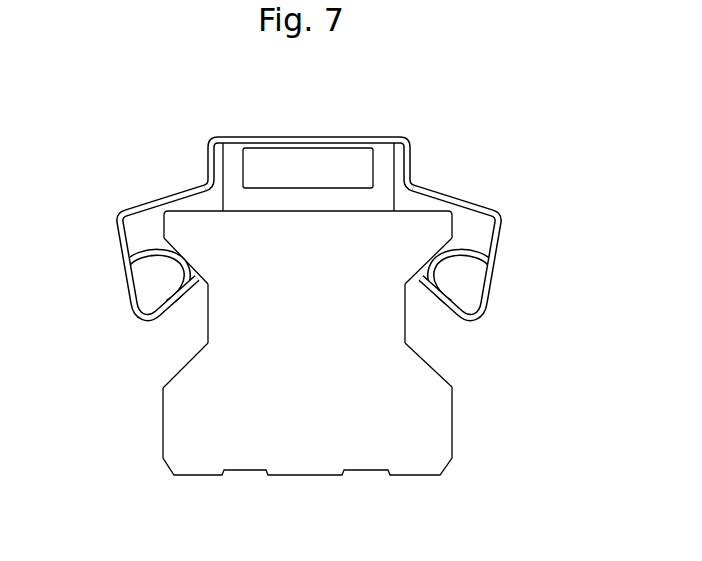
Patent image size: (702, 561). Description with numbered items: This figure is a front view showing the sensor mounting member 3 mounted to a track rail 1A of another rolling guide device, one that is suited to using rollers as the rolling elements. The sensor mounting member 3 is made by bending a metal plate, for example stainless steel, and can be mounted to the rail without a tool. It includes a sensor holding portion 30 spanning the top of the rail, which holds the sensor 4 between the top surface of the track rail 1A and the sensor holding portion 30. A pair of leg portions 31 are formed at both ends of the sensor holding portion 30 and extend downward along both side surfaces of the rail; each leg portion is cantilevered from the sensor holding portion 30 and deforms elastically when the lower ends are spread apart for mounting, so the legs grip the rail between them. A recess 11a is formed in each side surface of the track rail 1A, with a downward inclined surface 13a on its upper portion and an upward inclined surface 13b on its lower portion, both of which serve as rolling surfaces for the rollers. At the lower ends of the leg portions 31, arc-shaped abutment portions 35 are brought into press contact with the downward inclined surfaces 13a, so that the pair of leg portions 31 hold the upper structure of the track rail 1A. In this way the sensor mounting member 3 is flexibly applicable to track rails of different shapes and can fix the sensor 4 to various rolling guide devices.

The track rail 1A is at (456, 428).
The sensor mounting member 3 is at (416, 138).
The sensor 4 is at (300, 172).
The sensor holding portion 30 is at (363, 141).
The leg portions 31 is at (109, 207).
The abutment portion 35 is at (128, 264).
The downward inclined surface 13a is at (162, 299).
The recess 11a is at (208, 325).
The upward inclined surface 13b is at (176, 374).